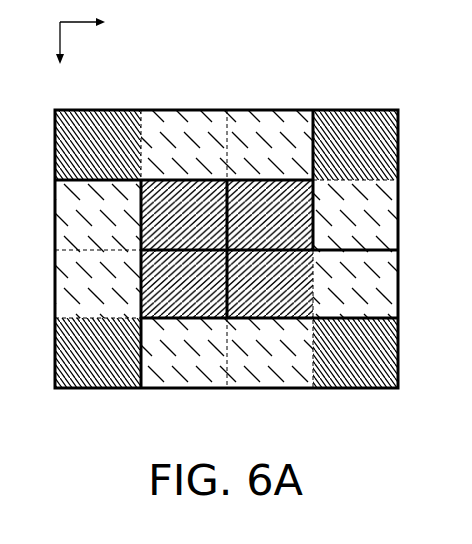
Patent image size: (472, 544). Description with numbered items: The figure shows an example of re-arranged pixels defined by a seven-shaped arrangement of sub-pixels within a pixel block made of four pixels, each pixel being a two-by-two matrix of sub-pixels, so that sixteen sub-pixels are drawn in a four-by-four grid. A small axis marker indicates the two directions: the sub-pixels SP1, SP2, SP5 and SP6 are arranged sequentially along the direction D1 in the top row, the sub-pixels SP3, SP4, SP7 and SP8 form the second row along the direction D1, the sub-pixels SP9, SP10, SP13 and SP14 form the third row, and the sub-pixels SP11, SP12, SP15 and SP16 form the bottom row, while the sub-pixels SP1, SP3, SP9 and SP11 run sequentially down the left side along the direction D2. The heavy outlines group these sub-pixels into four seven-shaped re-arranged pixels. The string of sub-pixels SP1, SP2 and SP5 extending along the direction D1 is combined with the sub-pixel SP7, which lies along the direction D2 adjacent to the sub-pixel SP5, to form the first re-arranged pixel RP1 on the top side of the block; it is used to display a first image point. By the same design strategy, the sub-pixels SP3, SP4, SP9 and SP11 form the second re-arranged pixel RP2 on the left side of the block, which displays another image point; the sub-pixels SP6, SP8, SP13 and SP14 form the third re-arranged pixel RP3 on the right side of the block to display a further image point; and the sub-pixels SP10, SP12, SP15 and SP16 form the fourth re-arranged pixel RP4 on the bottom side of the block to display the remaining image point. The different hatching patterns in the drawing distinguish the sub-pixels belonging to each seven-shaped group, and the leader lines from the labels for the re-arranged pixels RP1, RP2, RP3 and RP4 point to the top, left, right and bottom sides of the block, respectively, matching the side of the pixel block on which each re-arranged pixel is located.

The sub-pixel SP1 is at (98, 145).
The sub-pixel SP2 is at (184, 145).
The sub-pixel SP3 is at (98, 215).
The sub-pixel SP4 is at (184, 215).
The sub-pixel SP5 is at (270, 145).
The sub-pixel SP6 is at (355, 145).
The sub-pixel SP7 is at (270, 215).
The sub-pixel SP8 is at (355, 215).
The sub-pixel SP9 is at (98, 284).
The sub-pixel SP10 is at (184, 284).
The sub-pixel SP11 is at (98, 353).
The sub-pixel SP12 is at (184, 353).
The sub-pixel SP13 is at (270, 284).
The sub-pixel SP14 is at (355, 284).
The sub-pixel SP15 is at (270, 353).
The sub-pixel SP16 is at (355, 353).
The first re-arranged pixel RP1 is at (187, 110).
The second re-arranged pixel RP2 is at (98, 388).
The third re-arranged pixel RP3 is at (356, 110).
The fourth re-arranged pixel RP4 is at (358, 388).
The direction D1 is at (98, 23).
The direction D2 is at (59, 56).